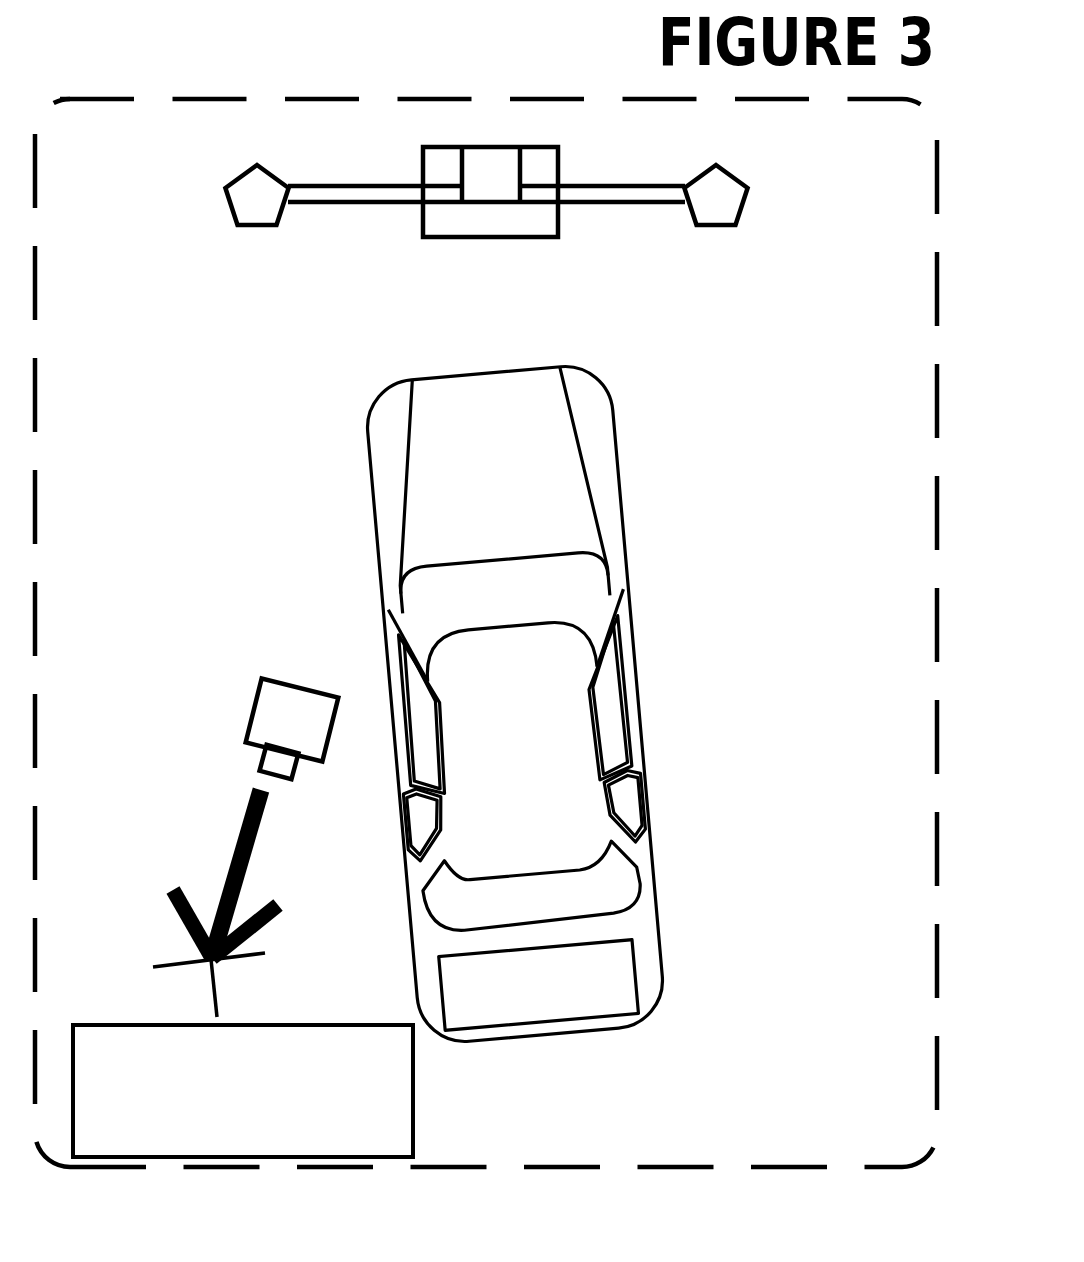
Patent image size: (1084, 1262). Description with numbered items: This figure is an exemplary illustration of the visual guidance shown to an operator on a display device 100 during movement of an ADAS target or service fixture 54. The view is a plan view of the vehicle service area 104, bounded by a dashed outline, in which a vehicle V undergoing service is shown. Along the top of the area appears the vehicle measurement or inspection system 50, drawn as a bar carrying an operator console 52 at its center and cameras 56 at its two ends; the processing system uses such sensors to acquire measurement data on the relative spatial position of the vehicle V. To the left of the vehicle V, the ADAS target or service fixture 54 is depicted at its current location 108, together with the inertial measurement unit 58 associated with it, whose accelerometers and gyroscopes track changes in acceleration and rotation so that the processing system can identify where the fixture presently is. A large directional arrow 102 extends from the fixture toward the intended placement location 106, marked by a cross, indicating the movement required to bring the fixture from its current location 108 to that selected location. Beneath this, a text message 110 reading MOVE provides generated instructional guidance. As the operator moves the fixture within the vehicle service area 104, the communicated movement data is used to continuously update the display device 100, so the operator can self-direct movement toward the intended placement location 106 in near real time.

The display device 100 is at (486, 592).
The vehicle measurement or inspection system 50 is at (454, 175).
The operator console 52 is at (475, 144).
The cameras 56 is at (454, 222).
The vehicle V is at (513, 689).
The vehicle service area 104 is at (216, 531).
The ADAS target or service fixture 54 is at (276, 674).
The current location 108 is at (220, 674).
The inertial measurement unit 58 is at (309, 801).
The directional arrows 102 is at (187, 858).
The intended placement location 106 is at (157, 961).
The text message 110 is at (312, 1091).